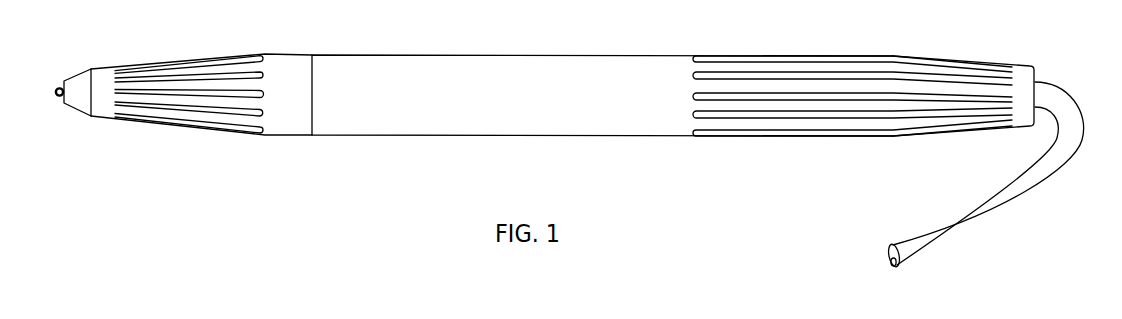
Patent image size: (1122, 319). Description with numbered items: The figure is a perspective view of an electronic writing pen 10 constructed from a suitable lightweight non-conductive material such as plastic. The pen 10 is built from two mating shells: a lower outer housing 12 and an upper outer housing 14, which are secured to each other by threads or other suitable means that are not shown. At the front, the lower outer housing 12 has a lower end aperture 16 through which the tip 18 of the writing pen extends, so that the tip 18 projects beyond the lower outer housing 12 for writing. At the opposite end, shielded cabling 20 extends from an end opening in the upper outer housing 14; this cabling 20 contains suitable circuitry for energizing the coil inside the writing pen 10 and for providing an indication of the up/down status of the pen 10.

The electronic writing pen 10 is at (466, 56).
The lower outer housing 12 is at (290, 120).
The upper outer housing 14 is at (627, 88).
The lower end aperture 16 is at (65, 81).
The tip 18 is at (60, 97).
The shielded cabling 20 is at (973, 214).